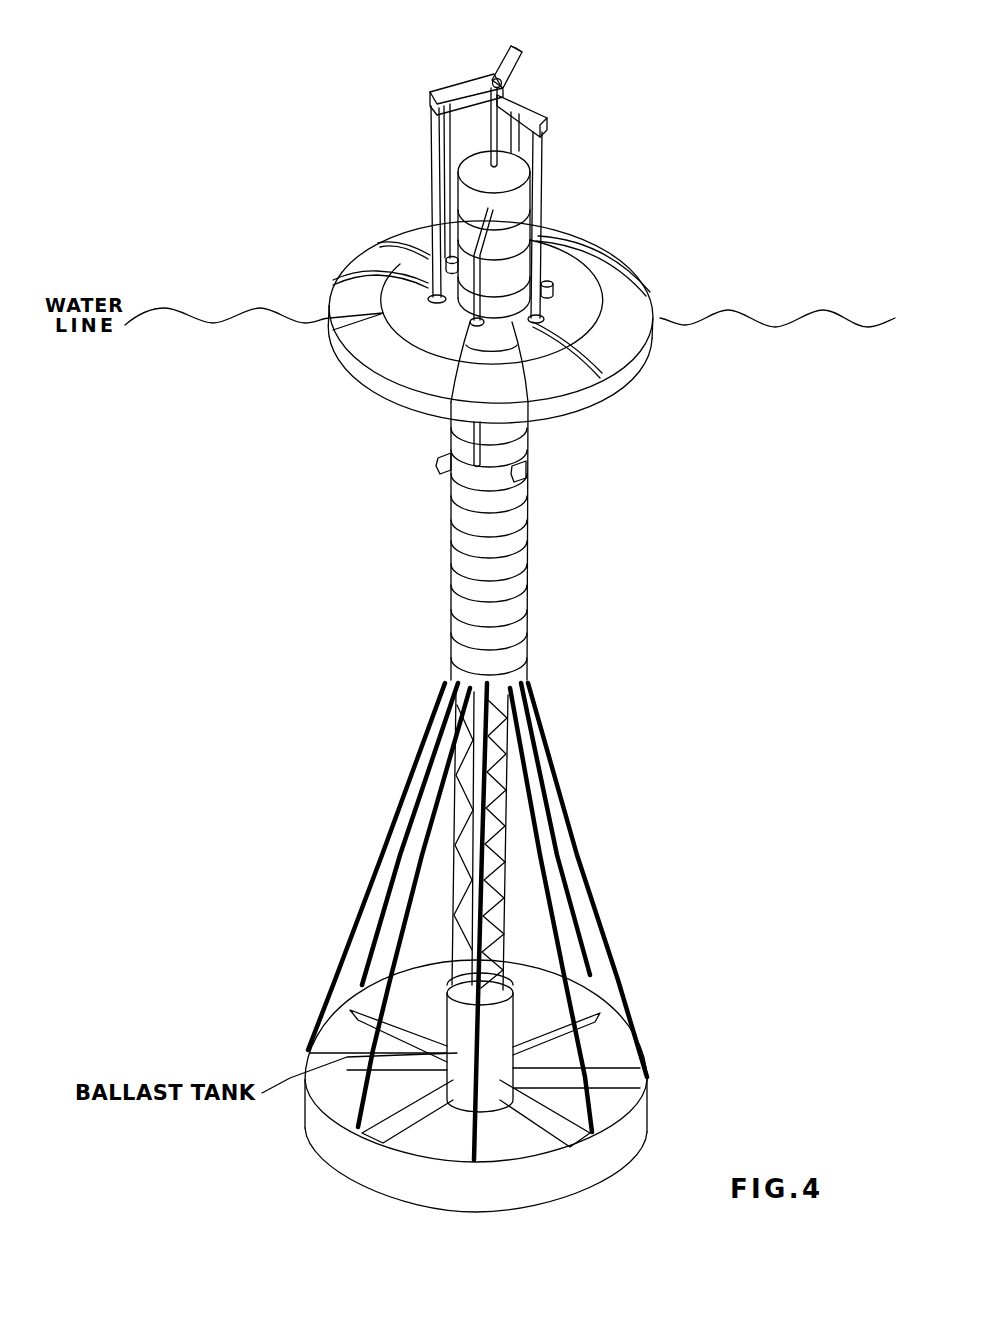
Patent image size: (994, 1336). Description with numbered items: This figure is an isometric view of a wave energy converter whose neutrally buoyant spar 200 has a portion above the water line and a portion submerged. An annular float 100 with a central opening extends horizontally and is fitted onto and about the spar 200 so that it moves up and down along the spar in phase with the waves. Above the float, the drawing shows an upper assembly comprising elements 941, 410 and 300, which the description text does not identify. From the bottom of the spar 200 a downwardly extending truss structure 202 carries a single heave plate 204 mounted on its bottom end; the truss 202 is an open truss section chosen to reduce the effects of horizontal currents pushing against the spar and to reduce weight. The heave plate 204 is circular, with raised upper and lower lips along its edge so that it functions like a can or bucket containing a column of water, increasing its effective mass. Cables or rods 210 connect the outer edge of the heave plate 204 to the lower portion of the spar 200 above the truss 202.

The rotation hub 941 is at (502, 82).
The tripod support frame 410 is at (548, 122).
The generator housing 300 is at (518, 226).
The annular float 100 is at (652, 345).
The spar 200 is at (516, 533).
The truss structure 202 is at (513, 745).
The cables (or rods) 210 is at (392, 868).
The heave plate 204 is at (640, 1110).